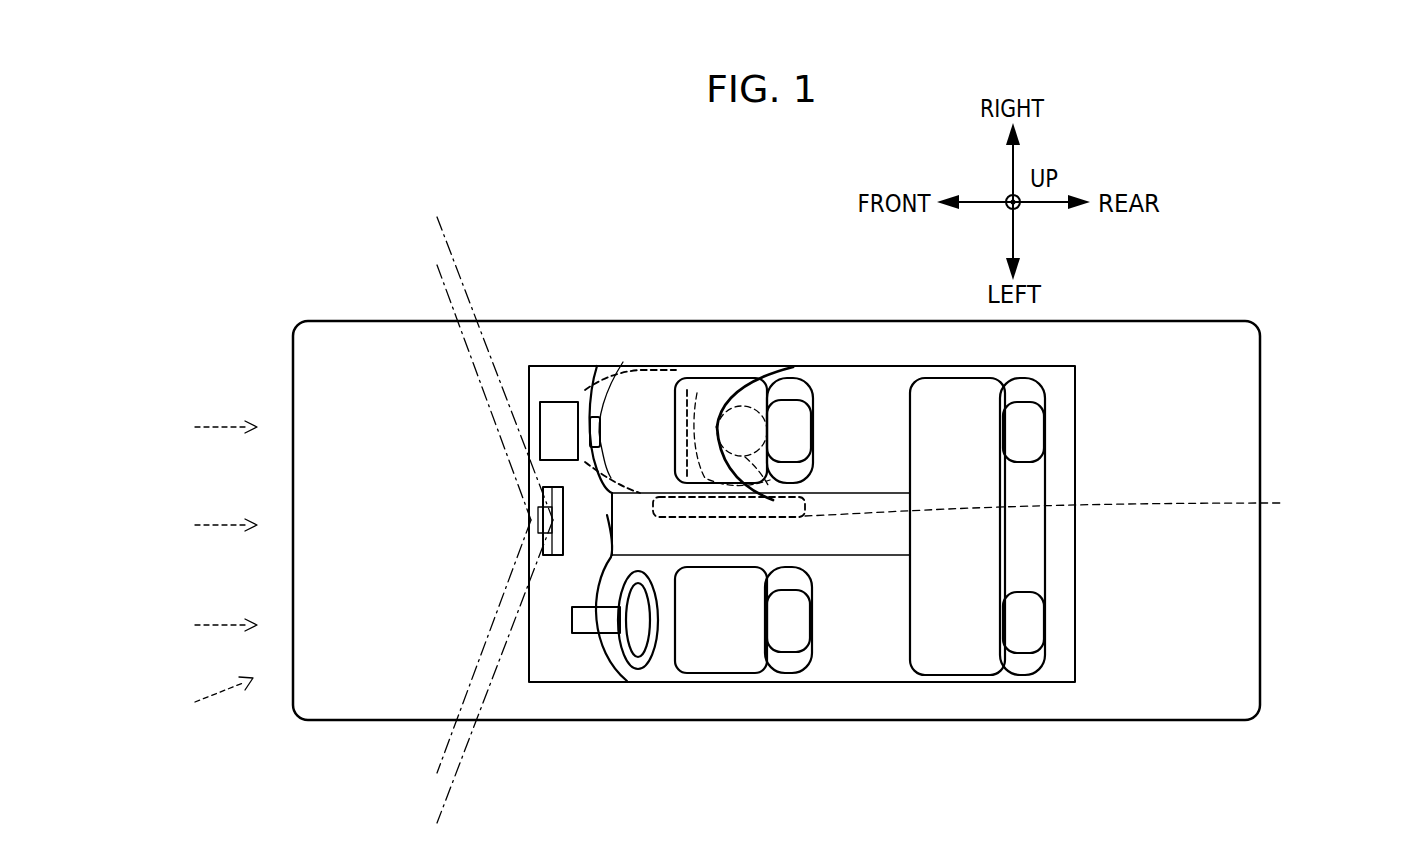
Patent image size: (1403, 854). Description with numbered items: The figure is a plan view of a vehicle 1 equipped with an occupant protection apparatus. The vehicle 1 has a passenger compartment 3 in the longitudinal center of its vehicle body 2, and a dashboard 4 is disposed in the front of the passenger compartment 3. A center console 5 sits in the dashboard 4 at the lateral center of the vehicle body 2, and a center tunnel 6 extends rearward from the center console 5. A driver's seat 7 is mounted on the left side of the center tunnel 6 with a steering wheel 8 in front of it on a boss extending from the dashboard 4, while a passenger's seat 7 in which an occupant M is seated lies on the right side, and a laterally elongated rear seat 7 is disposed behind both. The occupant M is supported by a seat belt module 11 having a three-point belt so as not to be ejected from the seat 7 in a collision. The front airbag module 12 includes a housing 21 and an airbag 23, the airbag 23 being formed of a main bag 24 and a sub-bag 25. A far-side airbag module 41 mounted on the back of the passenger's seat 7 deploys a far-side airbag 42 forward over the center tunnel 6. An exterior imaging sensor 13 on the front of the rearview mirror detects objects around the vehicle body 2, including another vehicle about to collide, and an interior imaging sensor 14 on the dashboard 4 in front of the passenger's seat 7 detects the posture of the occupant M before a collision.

The vehicle 1 is at (384, 228).
The vehicle body 2 is at (342, 320).
The passenger compartment 3 is at (842, 382).
The dashboard 4 is at (558, 640).
The center console 5 is at (611, 478).
The center tunnel 6 is at (863, 532).
The seat 7 is at (705, 390).
The steering wheel 8 is at (640, 672).
The seat belt module 11 is at (750, 373).
The front airbag module 12 is at (668, 204).
The exterior imaging sensor 13 is at (543, 540).
The interior imaging sensor 14 is at (590, 432).
The housing 21 is at (563, 400).
The airbag 23 is at (688, 253).
The main bag 24 is at (630, 388).
The sub-bag 25 is at (684, 370).
The far-side airbag module 41 is at (1042, 509).
The far-side airbag 42 is at (1080, 507).
The occupant M is at (766, 375).